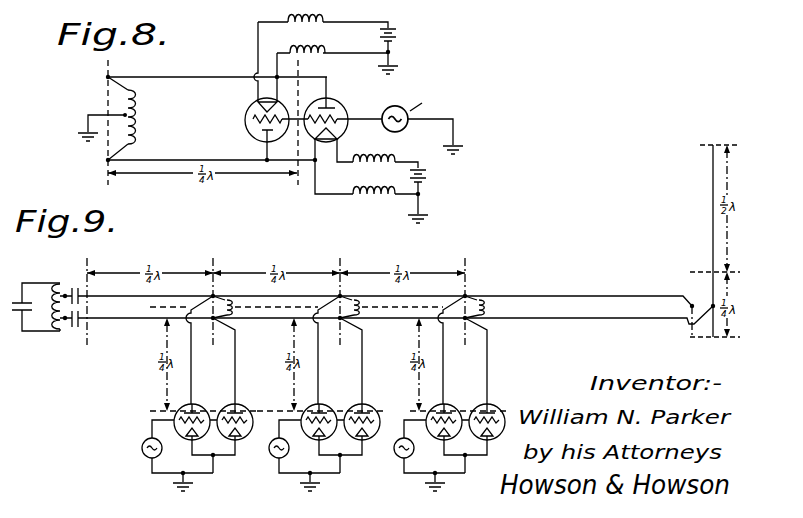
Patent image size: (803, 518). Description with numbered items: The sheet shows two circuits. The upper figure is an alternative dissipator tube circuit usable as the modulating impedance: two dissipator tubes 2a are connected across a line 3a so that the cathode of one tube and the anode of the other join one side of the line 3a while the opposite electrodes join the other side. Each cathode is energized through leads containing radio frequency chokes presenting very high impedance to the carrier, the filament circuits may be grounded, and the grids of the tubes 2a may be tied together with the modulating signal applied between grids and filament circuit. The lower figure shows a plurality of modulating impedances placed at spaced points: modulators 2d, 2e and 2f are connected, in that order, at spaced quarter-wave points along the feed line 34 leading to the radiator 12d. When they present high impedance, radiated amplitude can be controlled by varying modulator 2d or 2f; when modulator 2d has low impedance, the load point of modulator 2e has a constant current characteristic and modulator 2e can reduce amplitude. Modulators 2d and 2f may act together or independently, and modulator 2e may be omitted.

In FIG. 8, the dissipator tubes 2a is at (253, 108).
In FIG. 8, the line 3a is at (167, 78).
In FIG. 9, the modulator 2d is at (232, 406).
In FIG. 9, the modulator 2e is at (359, 406).
In FIG. 9, the modulator 2f is at (486, 406).
In FIG. 9, the radiator 12d is at (713, 222).
In FIG. 9, the feed line 34 is at (363, 301).